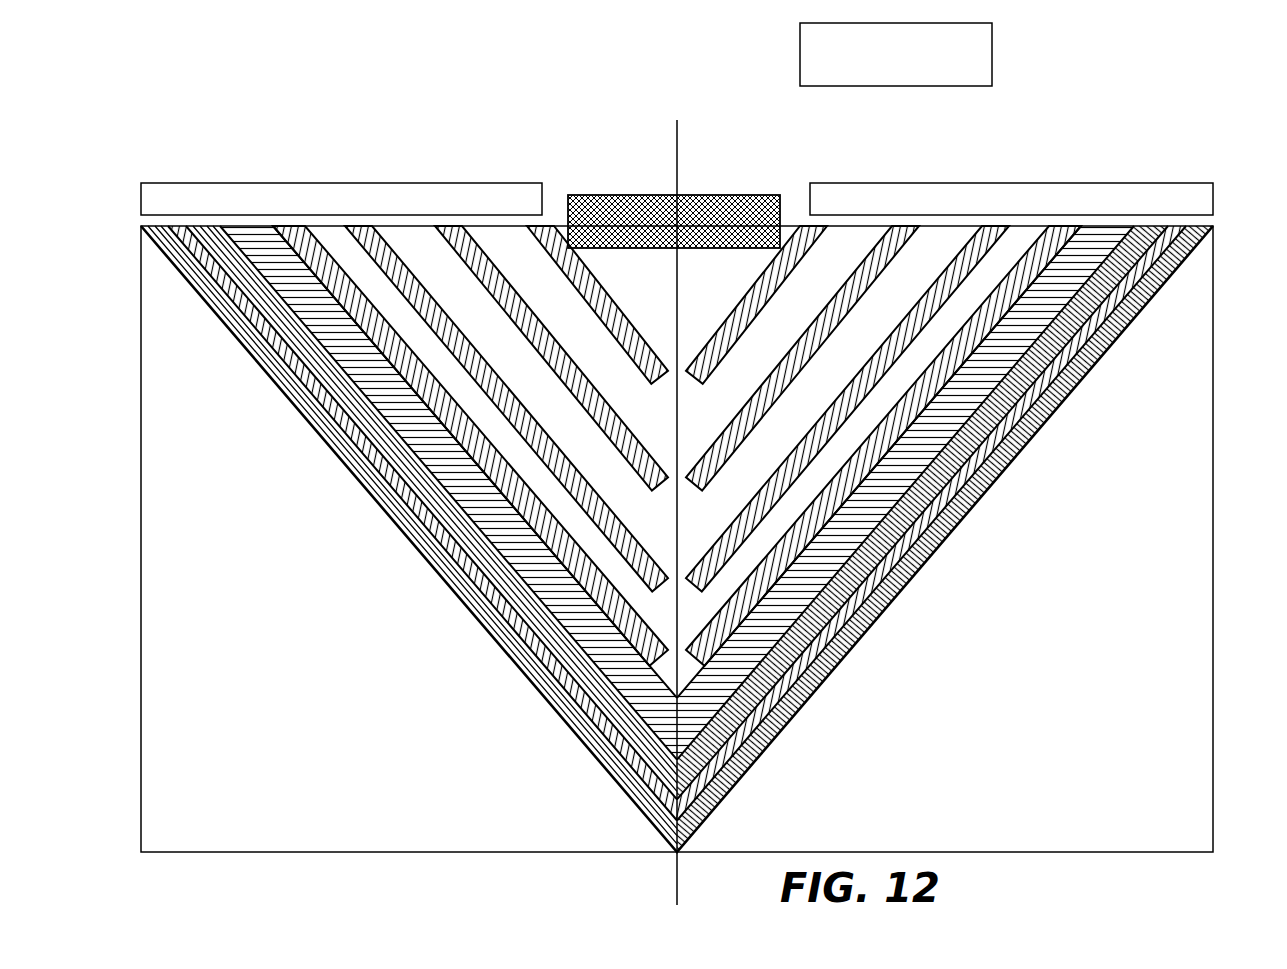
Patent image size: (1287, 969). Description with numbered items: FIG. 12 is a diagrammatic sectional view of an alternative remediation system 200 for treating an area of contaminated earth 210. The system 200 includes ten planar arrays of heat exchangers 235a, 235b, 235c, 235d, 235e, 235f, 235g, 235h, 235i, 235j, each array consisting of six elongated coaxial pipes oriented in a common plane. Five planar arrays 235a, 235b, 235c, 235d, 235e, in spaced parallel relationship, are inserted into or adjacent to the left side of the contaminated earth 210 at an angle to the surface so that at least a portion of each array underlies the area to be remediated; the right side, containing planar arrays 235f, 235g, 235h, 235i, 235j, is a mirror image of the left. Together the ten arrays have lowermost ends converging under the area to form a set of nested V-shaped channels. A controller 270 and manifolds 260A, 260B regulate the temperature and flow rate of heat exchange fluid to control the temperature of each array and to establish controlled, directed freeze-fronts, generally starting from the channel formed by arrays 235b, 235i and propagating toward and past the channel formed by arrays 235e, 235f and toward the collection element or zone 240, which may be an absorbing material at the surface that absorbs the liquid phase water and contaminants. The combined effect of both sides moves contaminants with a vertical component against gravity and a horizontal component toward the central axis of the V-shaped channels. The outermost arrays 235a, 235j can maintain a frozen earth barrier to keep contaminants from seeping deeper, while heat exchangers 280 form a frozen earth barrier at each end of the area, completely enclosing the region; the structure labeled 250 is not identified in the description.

The system 200 is at (386, 52).
The contaminated earth 210 is at (739, 287).
The planar array 235a is at (182, 225).
The planar array 235b is at (265, 225).
The planar array 235c is at (350, 225).
The planar array 235d is at (448, 225).
The planar array 235e is at (525, 225).
The planar array 235f is at (806, 225).
The planar array 235g is at (903, 225).
The planar array 235h is at (992, 225).
The planar array 235i is at (1068, 225).
The planar array 235j is at (1166, 225).
The collection element or zone 240 is at (607, 212).
The conduit stack 250 is at (971, 485).
The manifold 260A is at (527, 198).
The manifold 260B is at (822, 198).
The controller 270 is at (985, 68).
The heat exchangers 280 is at (497, 641).